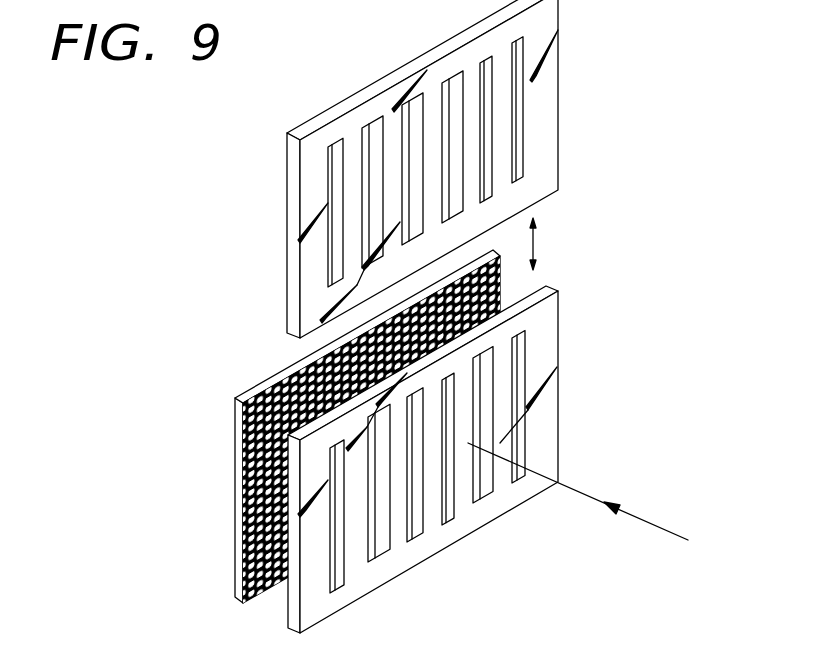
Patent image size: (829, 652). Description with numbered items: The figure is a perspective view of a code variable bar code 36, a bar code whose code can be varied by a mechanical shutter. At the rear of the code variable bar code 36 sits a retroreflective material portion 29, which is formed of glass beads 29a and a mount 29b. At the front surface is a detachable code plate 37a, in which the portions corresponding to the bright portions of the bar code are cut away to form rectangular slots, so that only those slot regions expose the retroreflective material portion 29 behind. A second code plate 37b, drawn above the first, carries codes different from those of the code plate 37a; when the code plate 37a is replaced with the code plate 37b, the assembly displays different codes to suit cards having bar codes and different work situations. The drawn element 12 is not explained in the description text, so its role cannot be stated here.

The light beam 12 is at (630, 512).
The perforated plate assembly 29 is at (288, 426).
The plate 29a is at (237, 440).
The perforated plate 29b is at (243, 403).
The optical filter assembly 36 is at (397, 316).
The lower slotted plate 37a is at (553, 310).
The upper slotted plate 37b is at (553, 113).